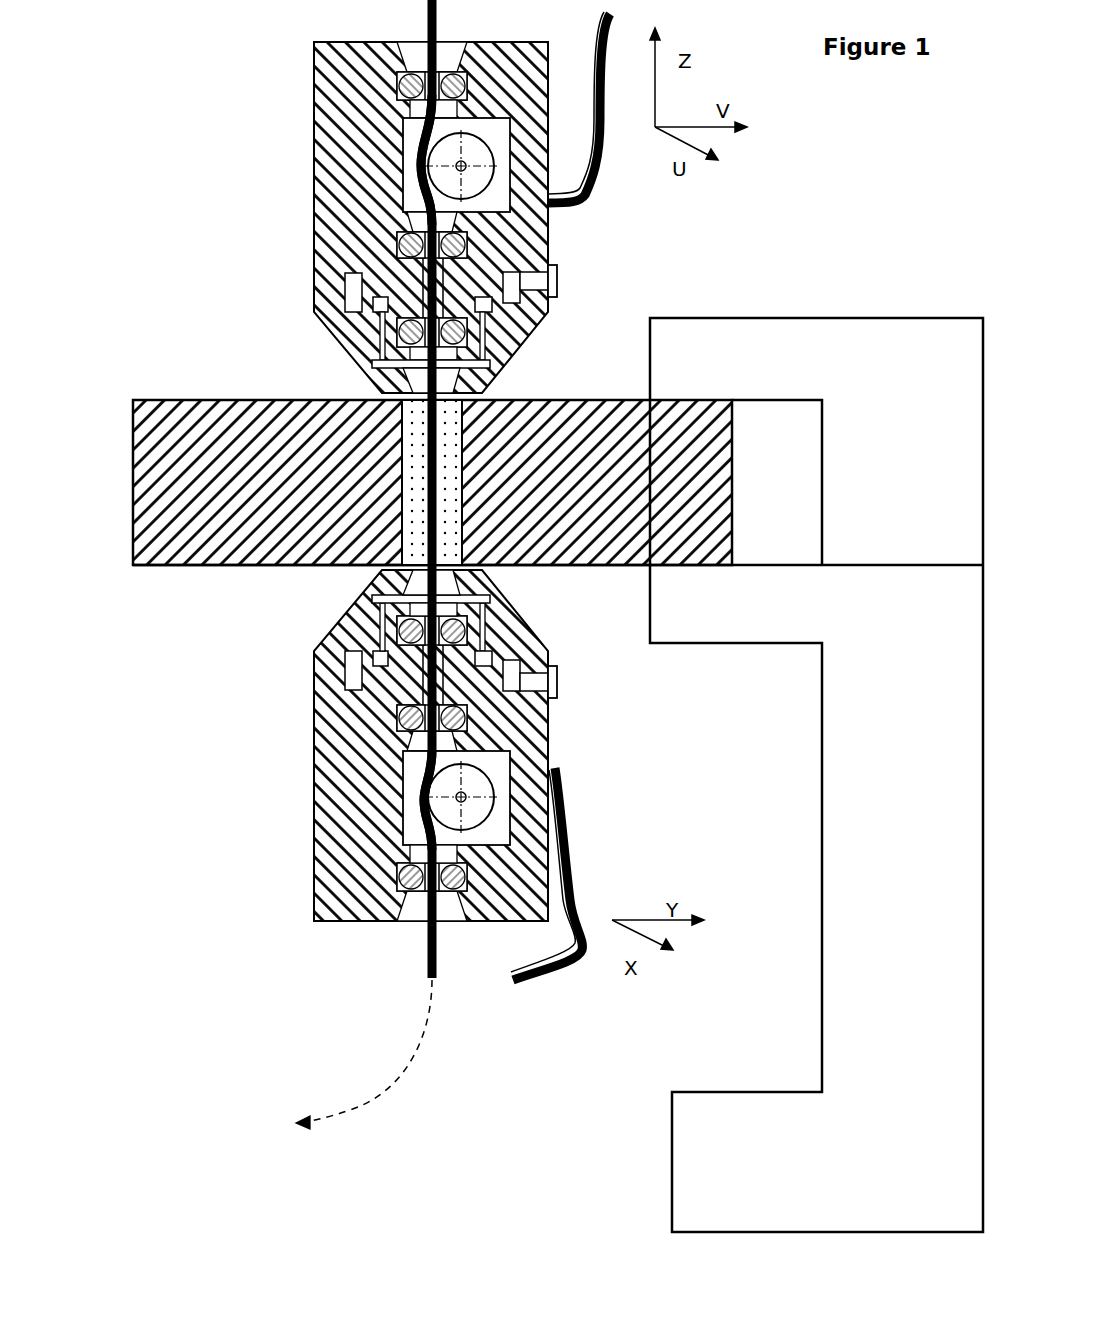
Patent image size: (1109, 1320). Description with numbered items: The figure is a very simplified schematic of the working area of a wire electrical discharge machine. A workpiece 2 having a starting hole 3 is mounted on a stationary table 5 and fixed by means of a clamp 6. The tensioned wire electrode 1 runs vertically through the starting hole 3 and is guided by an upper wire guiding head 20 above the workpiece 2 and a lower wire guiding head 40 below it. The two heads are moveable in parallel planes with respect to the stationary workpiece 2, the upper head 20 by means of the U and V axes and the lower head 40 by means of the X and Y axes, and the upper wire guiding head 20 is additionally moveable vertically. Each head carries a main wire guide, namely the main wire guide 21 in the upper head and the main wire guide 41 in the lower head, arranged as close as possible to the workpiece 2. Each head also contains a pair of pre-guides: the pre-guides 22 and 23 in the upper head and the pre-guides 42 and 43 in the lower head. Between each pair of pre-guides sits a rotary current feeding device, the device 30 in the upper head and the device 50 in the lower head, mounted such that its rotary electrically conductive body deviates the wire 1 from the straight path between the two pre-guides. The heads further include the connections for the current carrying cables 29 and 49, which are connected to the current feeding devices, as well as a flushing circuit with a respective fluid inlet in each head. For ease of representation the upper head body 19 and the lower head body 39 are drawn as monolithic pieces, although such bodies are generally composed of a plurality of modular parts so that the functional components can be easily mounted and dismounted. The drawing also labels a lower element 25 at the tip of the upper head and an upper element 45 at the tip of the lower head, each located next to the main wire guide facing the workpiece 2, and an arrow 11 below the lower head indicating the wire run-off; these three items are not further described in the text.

The wire electrode 1 is at (432, 510).
The workpiece 2 is at (158, 412).
The starting hole 3 is at (413, 470).
The stationary table 5 is at (822, 900).
The clamp 6 is at (815, 343).
The wire run-off direction 11 is at (358, 1075).
The upper head body 19 is at (549, 232).
The upper wire guiding head 20 is at (240, 41).
The main wire guide 21 is at (360, 343).
The pre-guide 22 is at (398, 90).
The pre-guide 23 is at (397, 246).
The upper guide plate 25 is at (385, 393).
The current carrying cable 29 is at (598, 145).
The rotary current feeding device 30 is at (402, 183).
The lower head body 39 is at (548, 725).
The lower wire guiding head 40 is at (240, 909).
The main wire guide 41 is at (385, 618).
The pre-guide 42 is at (397, 722).
The pre-guide 43 is at (397, 885).
The lower guide plate 45 is at (380, 572).
The current carrying cable 49 is at (555, 800).
The rotary current feeding device 50 is at (405, 808).